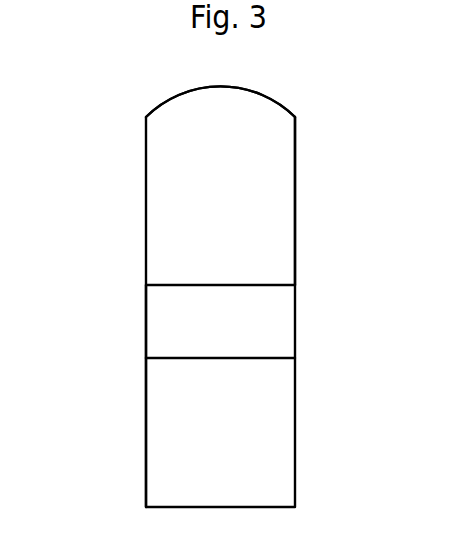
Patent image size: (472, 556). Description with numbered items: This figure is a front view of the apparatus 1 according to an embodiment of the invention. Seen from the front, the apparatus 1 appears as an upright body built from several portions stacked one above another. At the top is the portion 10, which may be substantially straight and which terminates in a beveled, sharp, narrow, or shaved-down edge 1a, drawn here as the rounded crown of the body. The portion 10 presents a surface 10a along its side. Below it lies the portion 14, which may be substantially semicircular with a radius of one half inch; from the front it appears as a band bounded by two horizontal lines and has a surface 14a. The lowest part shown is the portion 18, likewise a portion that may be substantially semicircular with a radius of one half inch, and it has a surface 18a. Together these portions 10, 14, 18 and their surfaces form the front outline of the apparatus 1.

The apparatus 1 is at (225, 280).
The edge 1a is at (248, 91).
The portion 10 is at (278, 147).
The surface 10a is at (278, 238).
The portion 14 is at (275, 322).
The surface 14a is at (165, 322).
The portion 18 is at (278, 425).
The surface 18a is at (155, 437).